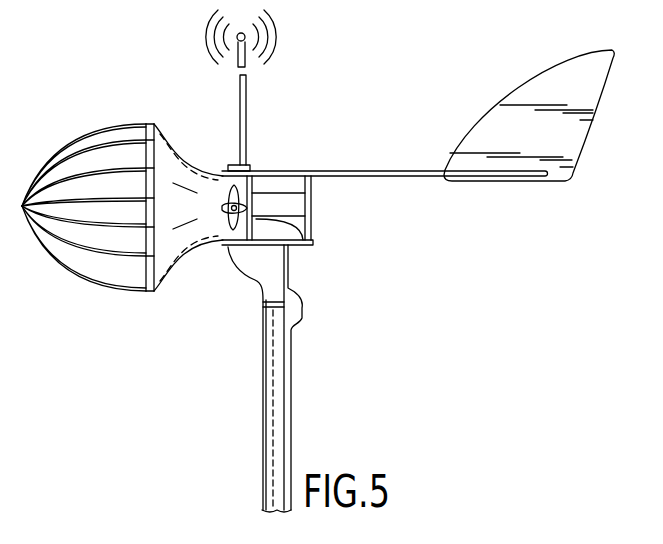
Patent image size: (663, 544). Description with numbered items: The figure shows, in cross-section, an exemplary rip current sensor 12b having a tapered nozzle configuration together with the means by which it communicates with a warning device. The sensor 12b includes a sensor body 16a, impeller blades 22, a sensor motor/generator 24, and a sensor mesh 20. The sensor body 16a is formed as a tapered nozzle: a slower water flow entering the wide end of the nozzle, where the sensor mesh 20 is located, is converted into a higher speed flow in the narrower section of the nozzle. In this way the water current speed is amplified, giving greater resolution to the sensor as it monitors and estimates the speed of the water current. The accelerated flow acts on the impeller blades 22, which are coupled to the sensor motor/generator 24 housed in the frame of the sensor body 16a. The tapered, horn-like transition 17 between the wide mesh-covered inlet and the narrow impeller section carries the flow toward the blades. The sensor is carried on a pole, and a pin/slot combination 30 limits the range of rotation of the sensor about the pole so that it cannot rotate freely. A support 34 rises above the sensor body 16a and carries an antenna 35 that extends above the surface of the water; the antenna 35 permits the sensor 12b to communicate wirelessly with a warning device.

The sensor 12b is at (121, 357).
The sensor body 16a is at (310, 225).
The horn / funnel 17 is at (177, 154).
The sensor mesh 20 is at (108, 284).
The impeller blades 22 is at (229, 214).
The sensor motor/generator 24 is at (285, 204).
The pin/slot combination 30 is at (273, 300).
The support 34 is at (247, 121).
The antenna 35 is at (246, 42).